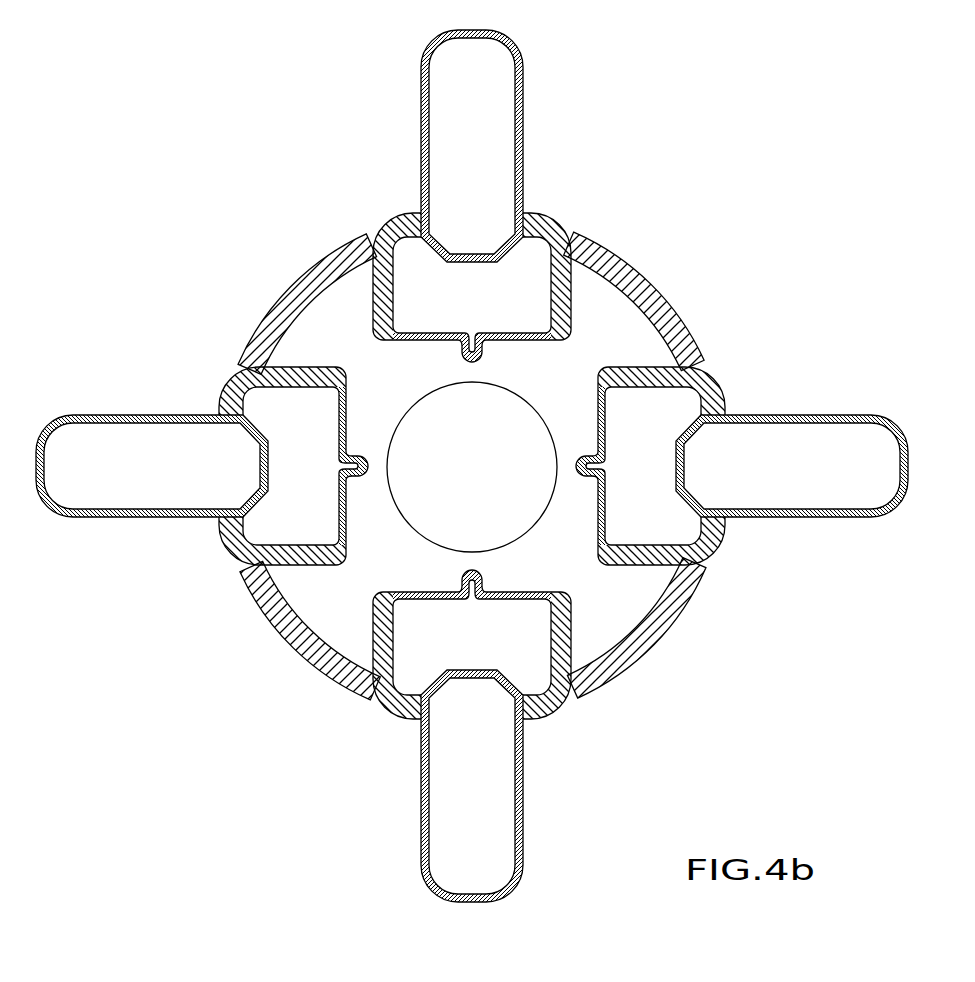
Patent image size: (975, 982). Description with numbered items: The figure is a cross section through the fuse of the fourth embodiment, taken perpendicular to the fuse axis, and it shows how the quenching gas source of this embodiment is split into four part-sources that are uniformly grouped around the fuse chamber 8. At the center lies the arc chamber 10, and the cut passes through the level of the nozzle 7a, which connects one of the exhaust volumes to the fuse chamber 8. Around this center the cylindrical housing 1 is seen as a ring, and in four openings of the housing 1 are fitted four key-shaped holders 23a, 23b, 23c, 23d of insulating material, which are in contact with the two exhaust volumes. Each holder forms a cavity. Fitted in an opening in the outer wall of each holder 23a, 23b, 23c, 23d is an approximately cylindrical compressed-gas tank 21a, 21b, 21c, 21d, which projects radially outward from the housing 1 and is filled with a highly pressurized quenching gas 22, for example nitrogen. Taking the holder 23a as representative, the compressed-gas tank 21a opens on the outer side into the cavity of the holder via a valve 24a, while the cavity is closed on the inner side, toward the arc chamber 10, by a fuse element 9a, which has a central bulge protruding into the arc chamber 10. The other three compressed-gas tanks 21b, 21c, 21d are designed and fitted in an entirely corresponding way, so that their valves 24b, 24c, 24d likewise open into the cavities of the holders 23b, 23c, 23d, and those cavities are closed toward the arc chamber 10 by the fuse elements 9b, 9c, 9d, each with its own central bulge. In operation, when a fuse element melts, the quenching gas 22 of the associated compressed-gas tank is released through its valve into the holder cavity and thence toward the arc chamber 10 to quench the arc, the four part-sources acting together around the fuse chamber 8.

The housing 1 is at (302, 308).
The nozzle 7a is at (392, 513).
The fuse chamber 8 is at (604, 349).
The fuse element 9a is at (600, 517).
The fuse element 9b is at (517, 343).
The fuse element 9c is at (348, 410).
The fuse element 9d is at (405, 593).
The arc chamber 10 is at (456, 455).
The compressed-gas tank 21a is at (832, 420).
The compressed-gas tank 21b is at (523, 88).
The compressed-gas tank 21c is at (96, 418).
The compressed-gas tank 21d is at (425, 817).
The quenching gas 22 is at (482, 155).
The key-shaped holder 23a is at (725, 547).
The key-shaped holder 23b is at (557, 228).
The key-shaped holder 23c is at (237, 540).
The key-shaped holder 23d is at (387, 707).
The valve 24a is at (680, 470).
The valve 24b is at (470, 265).
The valve 24c is at (265, 463).
The valve 24d is at (467, 673).